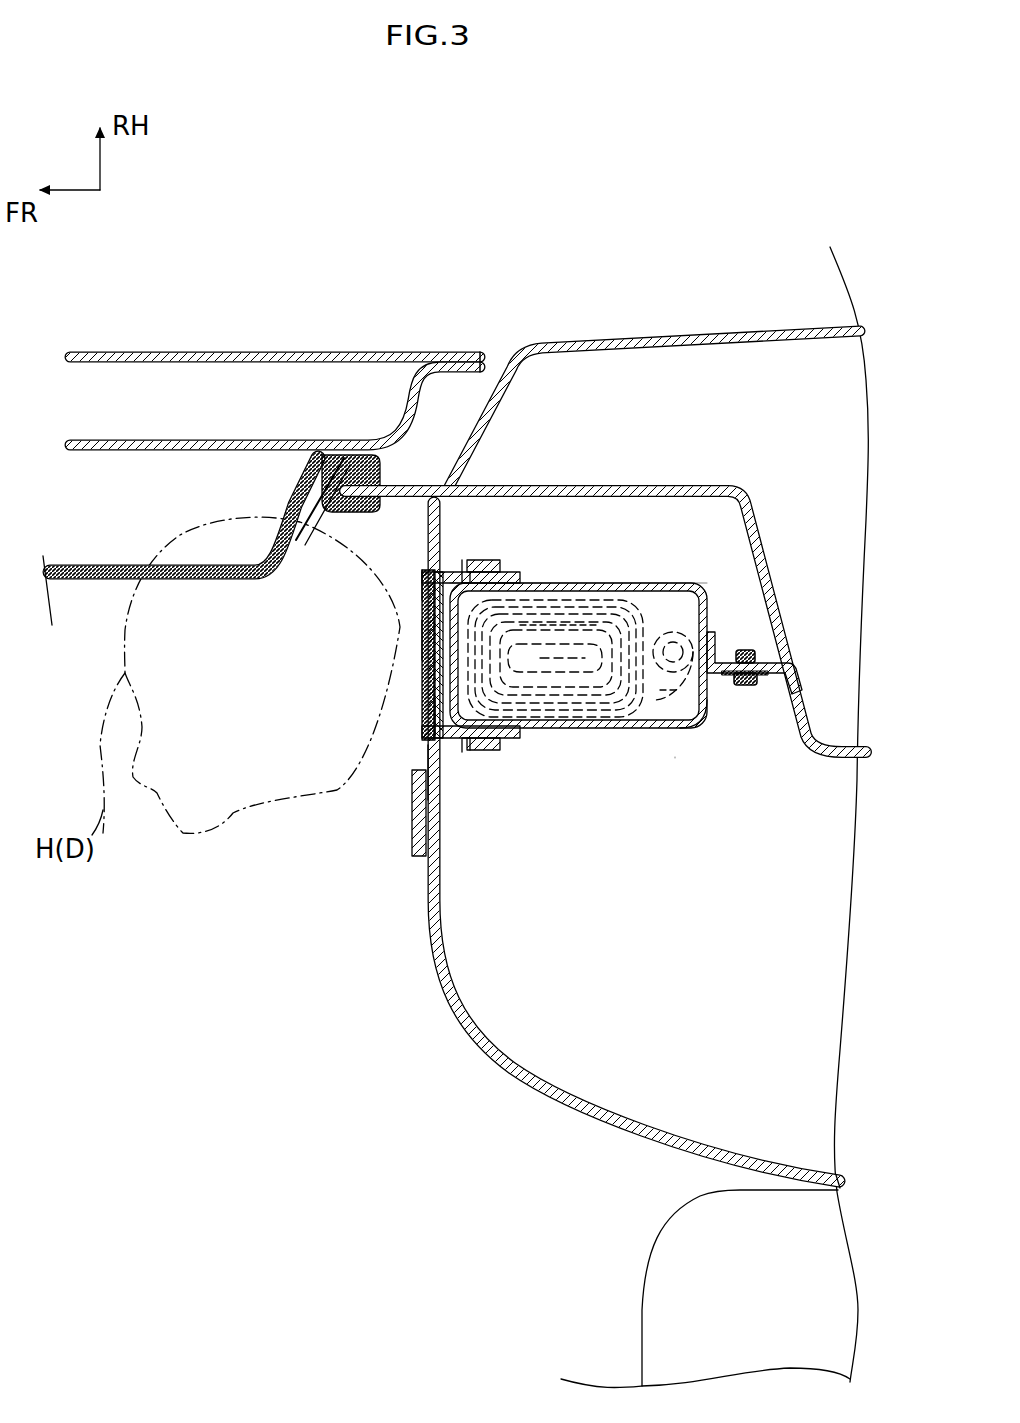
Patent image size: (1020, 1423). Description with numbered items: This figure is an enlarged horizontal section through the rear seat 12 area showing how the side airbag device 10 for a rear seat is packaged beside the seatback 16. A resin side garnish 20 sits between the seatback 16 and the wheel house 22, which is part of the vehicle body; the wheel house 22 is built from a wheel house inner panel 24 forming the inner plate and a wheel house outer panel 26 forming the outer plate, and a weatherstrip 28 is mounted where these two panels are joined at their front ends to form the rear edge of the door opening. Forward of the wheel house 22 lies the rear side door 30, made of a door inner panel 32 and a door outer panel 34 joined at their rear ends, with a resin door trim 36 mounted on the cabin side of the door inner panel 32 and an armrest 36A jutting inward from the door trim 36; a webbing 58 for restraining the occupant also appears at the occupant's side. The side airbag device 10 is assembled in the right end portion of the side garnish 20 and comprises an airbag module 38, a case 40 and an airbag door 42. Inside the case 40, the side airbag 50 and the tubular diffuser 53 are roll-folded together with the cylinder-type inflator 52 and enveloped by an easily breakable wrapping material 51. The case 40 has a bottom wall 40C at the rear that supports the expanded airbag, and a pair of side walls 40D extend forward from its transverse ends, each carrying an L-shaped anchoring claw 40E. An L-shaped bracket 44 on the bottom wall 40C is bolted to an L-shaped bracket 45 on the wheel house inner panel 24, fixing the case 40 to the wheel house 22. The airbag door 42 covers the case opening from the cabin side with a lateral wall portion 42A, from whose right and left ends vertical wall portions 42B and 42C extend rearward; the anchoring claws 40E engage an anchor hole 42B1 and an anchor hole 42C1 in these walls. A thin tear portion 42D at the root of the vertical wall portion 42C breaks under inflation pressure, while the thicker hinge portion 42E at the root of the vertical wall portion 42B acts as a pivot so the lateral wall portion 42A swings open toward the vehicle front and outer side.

The side airbag device for a rear seat 10 is at (680, 760).
The rear seat 12 is at (673, 1289).
The seatback 16 is at (625, 1322).
The side garnish 20 is at (509, 1079).
The wheel house 22 is at (720, 225).
The wheel house inner panel 24 is at (680, 488).
The wheel house outer panel 26 is at (571, 343).
The weatherstrip 28 is at (318, 525).
The rear side door 30 is at (282, 245).
The door inner panel 32 is at (193, 440).
The door outer panel 34 is at (107, 352).
The door trim 36 is at (168, 599).
The armrest 36A is at (97, 580).
The airbag module 38 is at (438, 650).
The case 40 is at (716, 612).
The bottom wall 40C is at (705, 712).
The side walls 40D is at (540, 583).
The anchoring claws 40E is at (470, 562).
The airbag door garnish 42 is at (414, 672).
The lateral wall portion 42A is at (422, 640).
The vertical wall portion 42B is at (540, 583).
The anchor hole 42B1 is at (467, 563).
The vertical wall portion 42C is at (513, 747).
The anchor hole 42C1 is at (465, 740).
The tear portion 42D is at (412, 795).
The hinge portion 42E is at (422, 612).
The L-shaped bracket 44 is at (716, 648).
The L-shaped bracket 45 is at (787, 700).
The side airbag 50 is at (633, 588).
The wrapping material 51 is at (430, 710).
The inflator 52 is at (670, 663).
The diffuser 53 is at (540, 620).
The webbing 58 is at (412, 845).